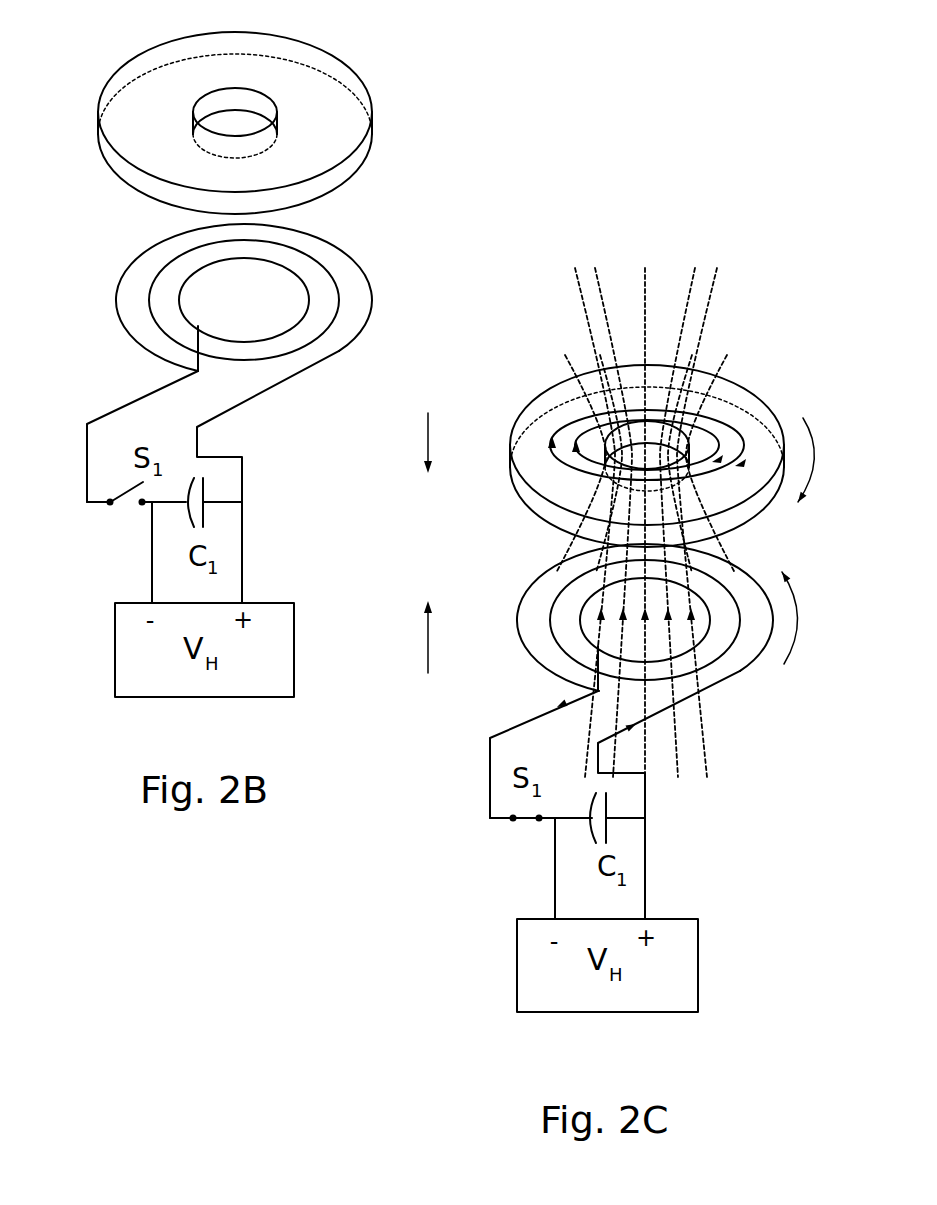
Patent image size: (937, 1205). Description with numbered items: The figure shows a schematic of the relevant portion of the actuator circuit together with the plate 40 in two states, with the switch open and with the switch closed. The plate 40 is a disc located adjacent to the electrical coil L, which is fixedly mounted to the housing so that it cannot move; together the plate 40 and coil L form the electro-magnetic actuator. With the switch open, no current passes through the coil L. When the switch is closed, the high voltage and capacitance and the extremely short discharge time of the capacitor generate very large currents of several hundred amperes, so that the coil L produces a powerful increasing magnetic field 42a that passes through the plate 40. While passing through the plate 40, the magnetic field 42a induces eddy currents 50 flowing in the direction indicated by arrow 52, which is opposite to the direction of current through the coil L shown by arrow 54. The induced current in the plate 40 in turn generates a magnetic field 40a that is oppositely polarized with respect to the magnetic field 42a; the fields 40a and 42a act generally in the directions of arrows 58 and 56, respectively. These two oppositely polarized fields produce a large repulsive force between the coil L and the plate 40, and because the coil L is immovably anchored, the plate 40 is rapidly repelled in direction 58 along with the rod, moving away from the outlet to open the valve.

In FIG. 2B, the plate 40 is at (170, 97).
In FIG. 2C, the plate 40 is at (528, 423).
In FIG. 2B, the electrical coil L is at (117, 255).
In FIG. 2C, the electrical coil L is at (487, 570).
In FIG. 2C, the magnetic field 40a is at (761, 287).
In FIG. 2C, the eddy currents 50 is at (568, 425).
In FIG. 2C, the arrow 52 is at (796, 507).
In FIG. 2C, the arrow 54 is at (799, 617).
In FIG. 2C, the arrow 56 is at (428, 440).
In FIG. 2C, the arrow 58 is at (428, 637).
In FIG. 2C, the magnetic field 42a is at (728, 755).